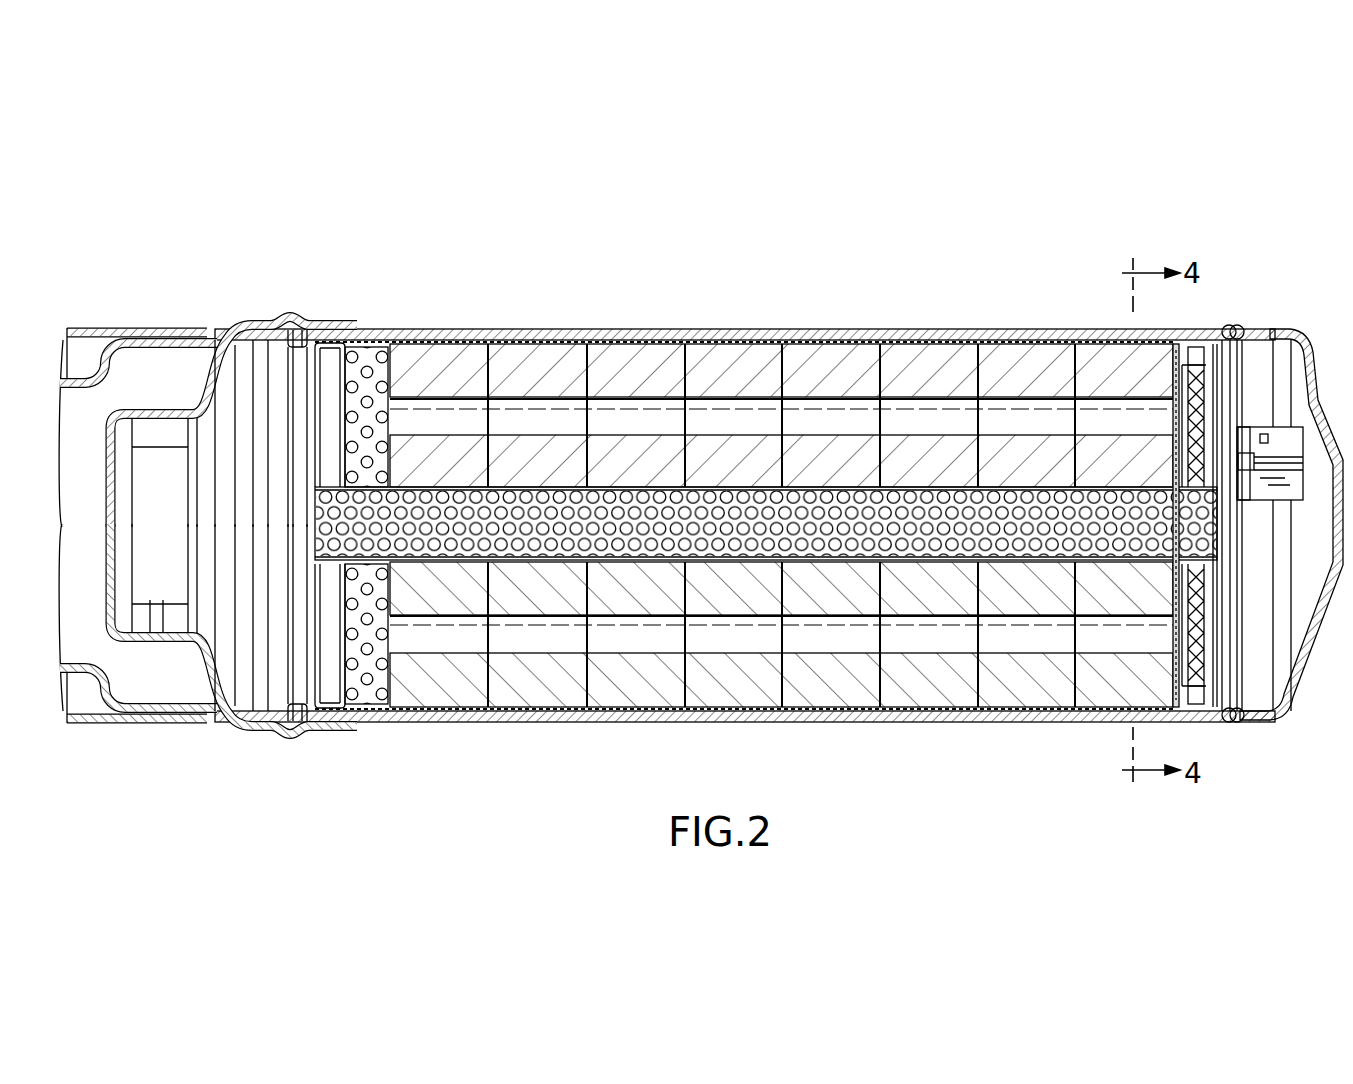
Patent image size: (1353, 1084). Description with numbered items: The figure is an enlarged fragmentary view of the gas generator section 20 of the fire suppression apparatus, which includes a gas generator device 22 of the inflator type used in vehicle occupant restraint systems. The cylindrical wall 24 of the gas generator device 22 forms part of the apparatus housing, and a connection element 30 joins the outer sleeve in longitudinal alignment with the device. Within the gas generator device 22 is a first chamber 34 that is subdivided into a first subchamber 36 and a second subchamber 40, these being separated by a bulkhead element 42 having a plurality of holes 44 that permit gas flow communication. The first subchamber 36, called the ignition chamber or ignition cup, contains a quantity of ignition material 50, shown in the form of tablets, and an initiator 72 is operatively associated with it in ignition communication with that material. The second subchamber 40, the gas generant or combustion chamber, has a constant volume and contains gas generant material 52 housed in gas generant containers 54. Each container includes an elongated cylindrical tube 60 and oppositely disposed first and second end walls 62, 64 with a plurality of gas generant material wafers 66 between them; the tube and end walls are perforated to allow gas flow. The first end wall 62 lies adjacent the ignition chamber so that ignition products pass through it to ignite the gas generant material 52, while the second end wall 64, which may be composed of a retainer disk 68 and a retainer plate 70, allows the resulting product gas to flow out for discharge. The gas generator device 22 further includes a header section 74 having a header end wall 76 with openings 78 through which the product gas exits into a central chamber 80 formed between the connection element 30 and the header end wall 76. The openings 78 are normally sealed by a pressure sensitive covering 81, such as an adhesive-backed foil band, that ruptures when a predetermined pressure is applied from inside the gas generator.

The gas generator section 20 is at (950, 244).
The gas generator device 22 is at (530, 724).
The cylindrical wall 24 is at (1300, 705).
The connection element 30 is at (94, 354).
The first chamber 34 is at (634, 522).
The first subchamber 36 is at (1224, 727).
The second subchamber 40 is at (733, 527).
The bulkhead element 42 is at (1180, 347).
The holes 44 is at (1181, 652).
The ignition material 50 is at (1198, 358).
The gas generant material 52 is at (630, 684).
The gas generant containers 54 is at (388, 730).
The elongated cylindrical tube 60 is at (497, 343).
The first end wall 62 is at (1178, 590).
The second end wall 64 is at (390, 392).
The gas generant material wafers 66 is at (737, 353).
The retainer disk 68 is at (365, 355).
The retainer plate 70 is at (306, 330).
The initiator 72 is at (1254, 432).
The header section 74 is at (203, 462).
The header end wall 76 is at (128, 645).
The openings 78 is at (157, 644).
The central chamber 80 is at (139, 372).
The pressure sensitive covering 81 is at (170, 603).